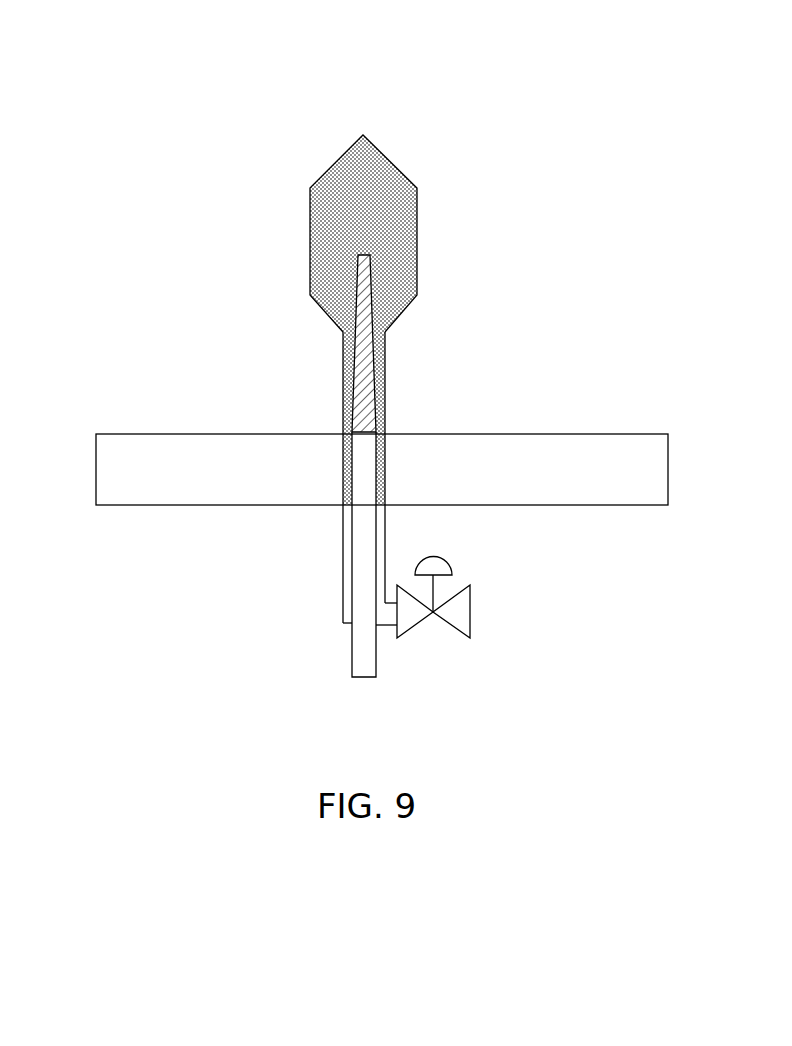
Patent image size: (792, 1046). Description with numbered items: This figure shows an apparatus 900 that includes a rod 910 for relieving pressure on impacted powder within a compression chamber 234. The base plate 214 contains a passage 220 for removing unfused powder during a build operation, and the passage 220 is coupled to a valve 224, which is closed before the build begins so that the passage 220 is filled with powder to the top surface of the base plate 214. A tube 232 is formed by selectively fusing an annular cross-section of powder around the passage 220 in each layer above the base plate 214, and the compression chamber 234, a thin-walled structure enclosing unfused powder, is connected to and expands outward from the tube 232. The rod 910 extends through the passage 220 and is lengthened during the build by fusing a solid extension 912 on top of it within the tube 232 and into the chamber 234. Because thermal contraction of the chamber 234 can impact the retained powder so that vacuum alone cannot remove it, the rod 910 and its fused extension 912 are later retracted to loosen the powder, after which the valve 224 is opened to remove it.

The apparatus 900 is at (170, 76).
The compression chamber 234 is at (340, 158).
The tube 232 is at (385, 393).
The extension 912 is at (363, 405).
The passage 220 is at (345, 478).
The base plate 214 is at (183, 507).
The rod 910 is at (350, 653).
The valve 224 is at (447, 623).